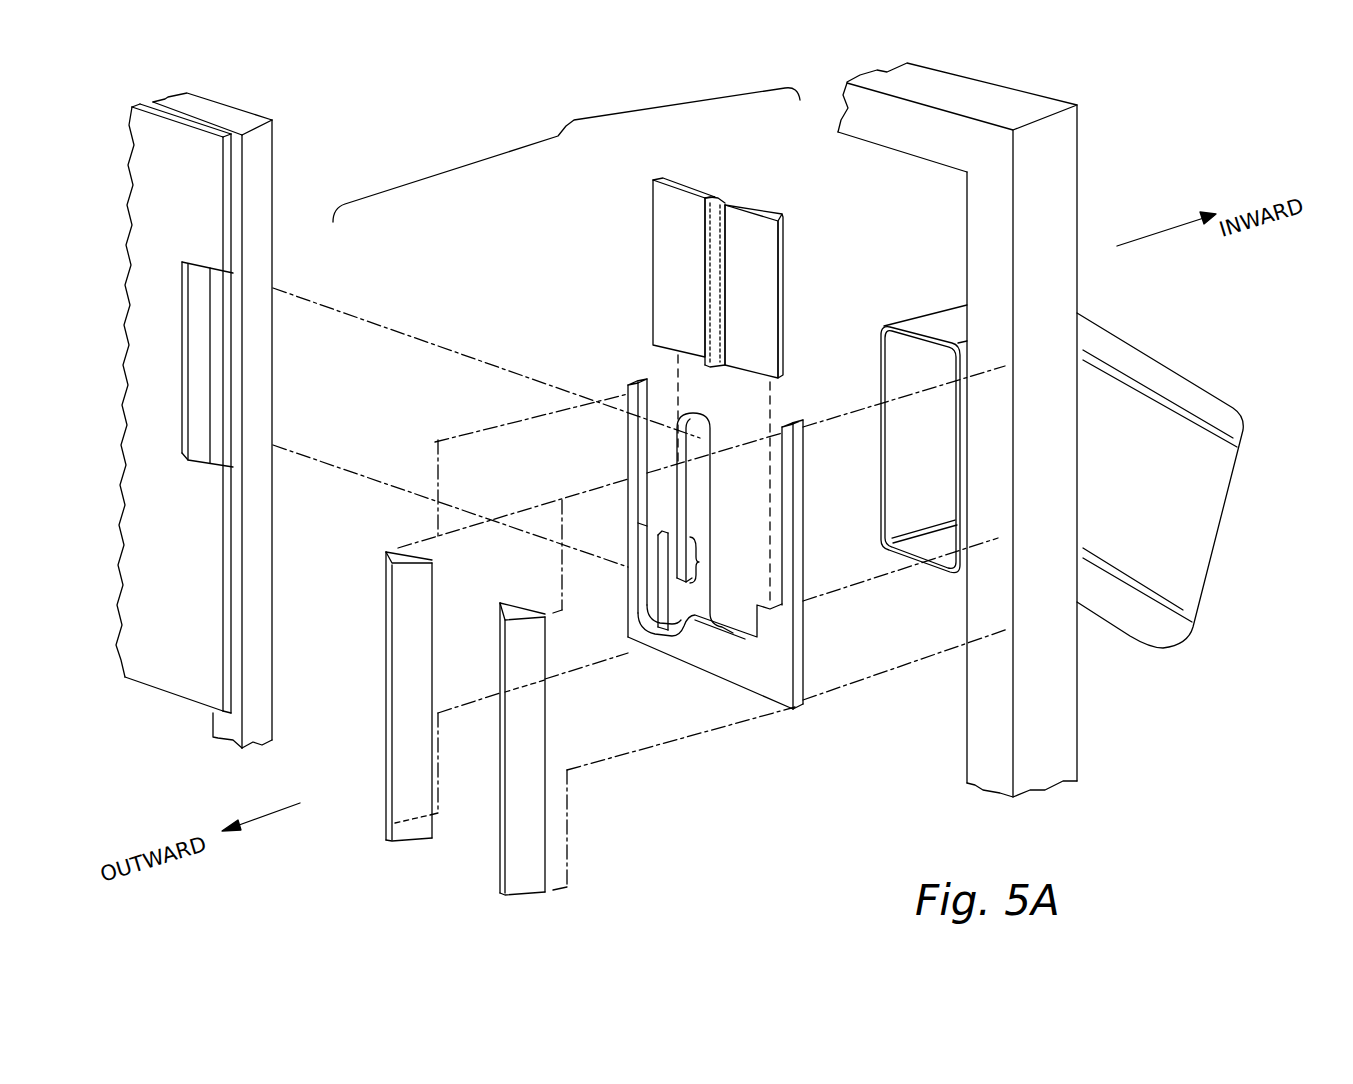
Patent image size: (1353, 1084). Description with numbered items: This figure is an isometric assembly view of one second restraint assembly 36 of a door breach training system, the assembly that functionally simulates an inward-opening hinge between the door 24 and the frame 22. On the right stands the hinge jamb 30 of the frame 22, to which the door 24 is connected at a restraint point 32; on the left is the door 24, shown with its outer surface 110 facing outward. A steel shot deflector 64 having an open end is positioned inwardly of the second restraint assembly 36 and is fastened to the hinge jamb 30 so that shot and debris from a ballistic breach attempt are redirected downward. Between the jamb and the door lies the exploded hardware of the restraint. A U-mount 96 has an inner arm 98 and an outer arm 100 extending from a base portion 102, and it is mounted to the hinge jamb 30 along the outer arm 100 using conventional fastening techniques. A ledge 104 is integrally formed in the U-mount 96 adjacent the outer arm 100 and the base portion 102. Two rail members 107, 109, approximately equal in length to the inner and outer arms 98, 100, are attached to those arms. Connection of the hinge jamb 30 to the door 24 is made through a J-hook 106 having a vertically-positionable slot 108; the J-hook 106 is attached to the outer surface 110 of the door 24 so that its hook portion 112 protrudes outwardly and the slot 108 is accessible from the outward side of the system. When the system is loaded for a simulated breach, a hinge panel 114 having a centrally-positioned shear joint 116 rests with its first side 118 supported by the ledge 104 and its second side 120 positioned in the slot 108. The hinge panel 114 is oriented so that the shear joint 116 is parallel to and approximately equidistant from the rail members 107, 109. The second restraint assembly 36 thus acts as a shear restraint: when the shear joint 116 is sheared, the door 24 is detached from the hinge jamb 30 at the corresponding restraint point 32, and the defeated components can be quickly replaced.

The frame 22 is at (1020, 100).
The door 24 is at (148, 192).
The hinge jamb 30 is at (1036, 258).
The restraint point 32 is at (978, 456).
The second restraint assembly 36 is at (565, 128).
The shot deflector 64 is at (953, 313).
The U-mount 96 is at (795, 712).
The inner arm 98 is at (637, 380).
The outer arm 100 is at (800, 472).
The base portion 102 is at (706, 671).
The ledge 104 is at (770, 600).
The J-hook 106 is at (703, 523).
The rail member 107 is at (415, 833).
The slot 108 is at (714, 560).
The rail member 109 is at (530, 885).
The outer surface 110 is at (262, 142).
The hook portion 112 is at (668, 533).
The hinge panel 114 is at (698, 188).
The shear joint 116 is at (718, 362).
The first side 118 is at (782, 297).
The second side 120 is at (650, 215).